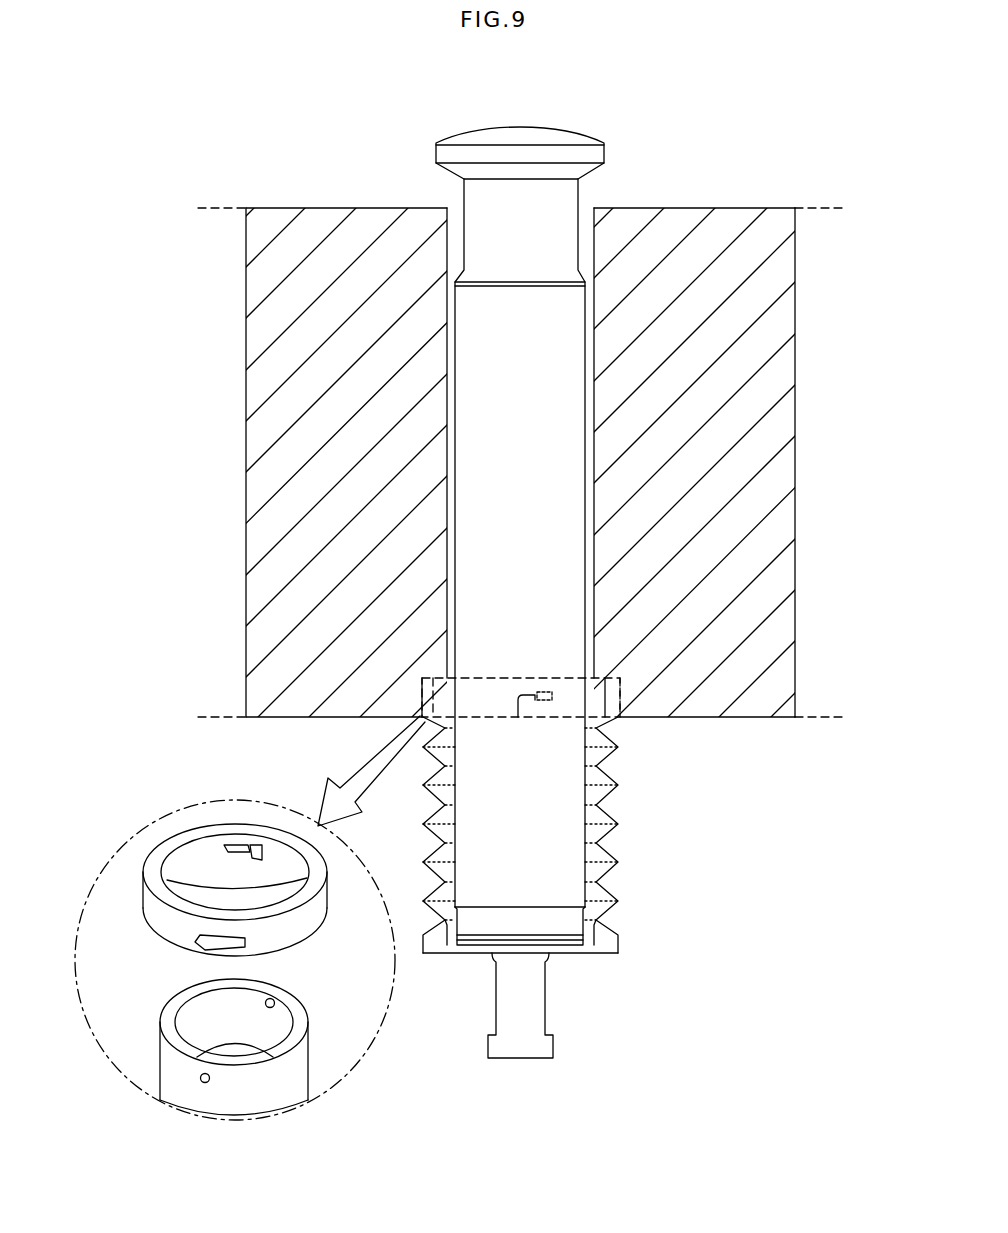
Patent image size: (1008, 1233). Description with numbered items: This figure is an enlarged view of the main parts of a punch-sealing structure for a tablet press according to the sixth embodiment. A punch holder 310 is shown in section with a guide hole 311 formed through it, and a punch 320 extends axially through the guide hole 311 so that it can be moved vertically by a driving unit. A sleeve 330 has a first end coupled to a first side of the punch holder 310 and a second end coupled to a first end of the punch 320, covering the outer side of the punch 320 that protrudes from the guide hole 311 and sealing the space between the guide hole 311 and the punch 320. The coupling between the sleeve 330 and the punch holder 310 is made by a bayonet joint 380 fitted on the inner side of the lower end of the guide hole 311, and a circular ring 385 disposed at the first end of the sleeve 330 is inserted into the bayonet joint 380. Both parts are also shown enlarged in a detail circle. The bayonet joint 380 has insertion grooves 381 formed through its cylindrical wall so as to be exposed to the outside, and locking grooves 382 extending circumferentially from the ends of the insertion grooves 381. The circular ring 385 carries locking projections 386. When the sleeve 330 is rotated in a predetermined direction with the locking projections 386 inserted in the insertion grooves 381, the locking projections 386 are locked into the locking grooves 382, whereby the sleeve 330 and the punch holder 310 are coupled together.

The punch holder 310 is at (330, 215).
The guide hole 311 is at (590, 208).
The punch 320 is at (565, 410).
The sleeve 330 is at (612, 847).
The bayonet joint 380 is at (612, 695).
The insertion groove 381 is at (262, 857).
The locking groove 382 is at (236, 843).
The circular ring 385 is at (605, 718).
The locking projection 386 is at (203, 1080).